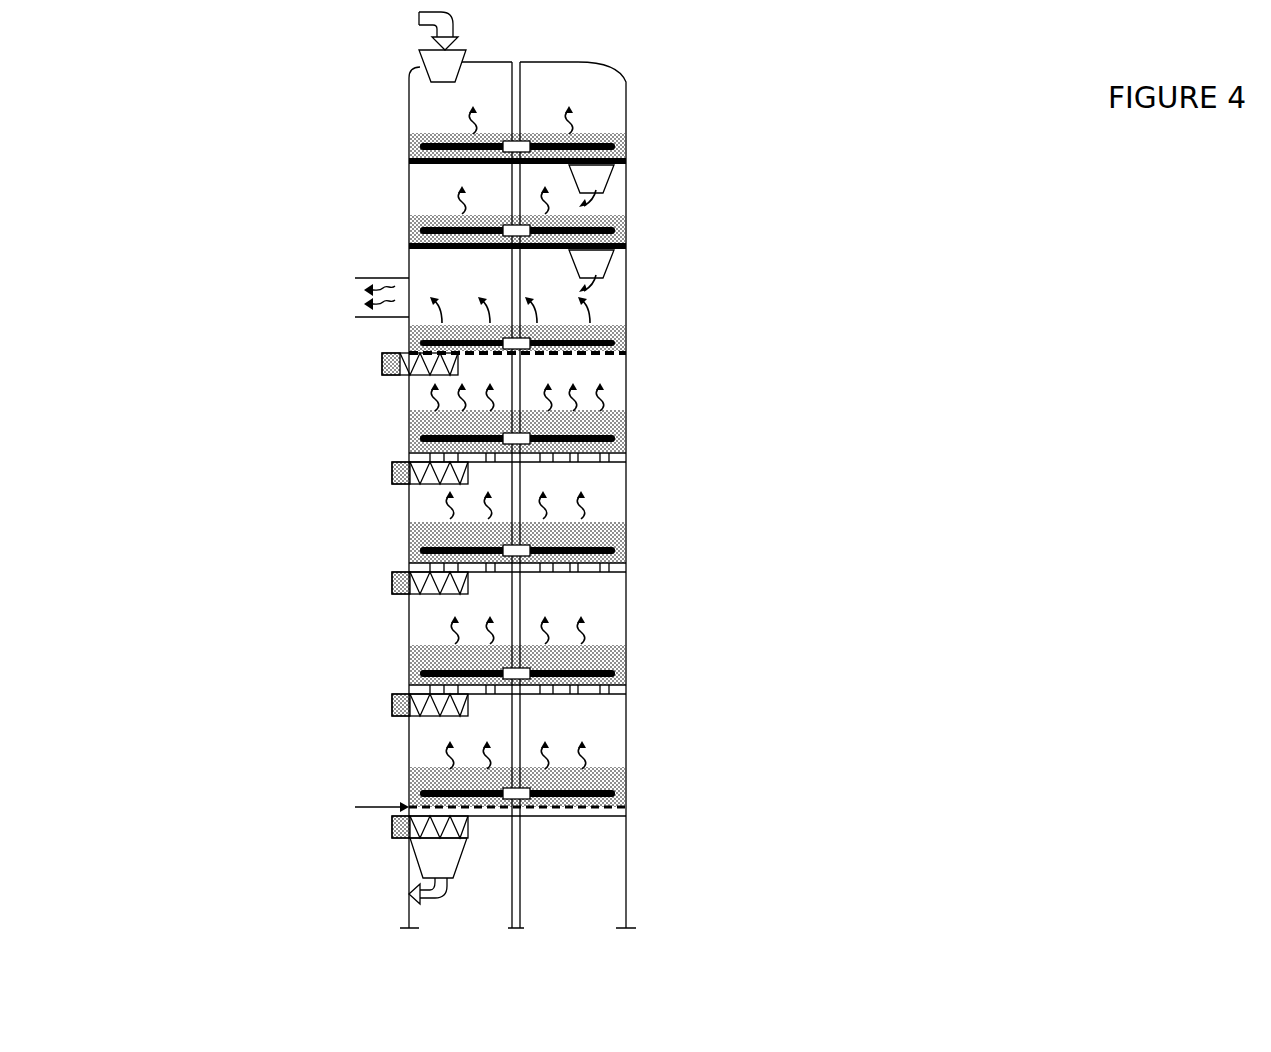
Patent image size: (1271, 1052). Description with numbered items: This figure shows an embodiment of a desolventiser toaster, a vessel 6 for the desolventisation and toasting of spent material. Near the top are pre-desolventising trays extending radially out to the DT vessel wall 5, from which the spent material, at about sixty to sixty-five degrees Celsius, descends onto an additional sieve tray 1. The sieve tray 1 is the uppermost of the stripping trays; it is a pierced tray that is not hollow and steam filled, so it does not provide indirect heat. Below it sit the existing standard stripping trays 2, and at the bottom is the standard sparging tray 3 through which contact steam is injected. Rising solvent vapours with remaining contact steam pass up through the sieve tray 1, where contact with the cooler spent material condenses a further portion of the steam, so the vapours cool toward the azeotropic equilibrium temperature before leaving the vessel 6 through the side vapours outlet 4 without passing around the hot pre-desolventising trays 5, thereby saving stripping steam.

The sieve tray 1 is at (626, 352).
The stripping trays 2 is at (626, 457).
The sparging tray 3 is at (626, 805).
The side vapours outlet 4 is at (357, 297).
The pre-desolventising trays extending radially out to the DT vessel wall 5 is at (626, 162).
The column housing 6 is at (409, 102).